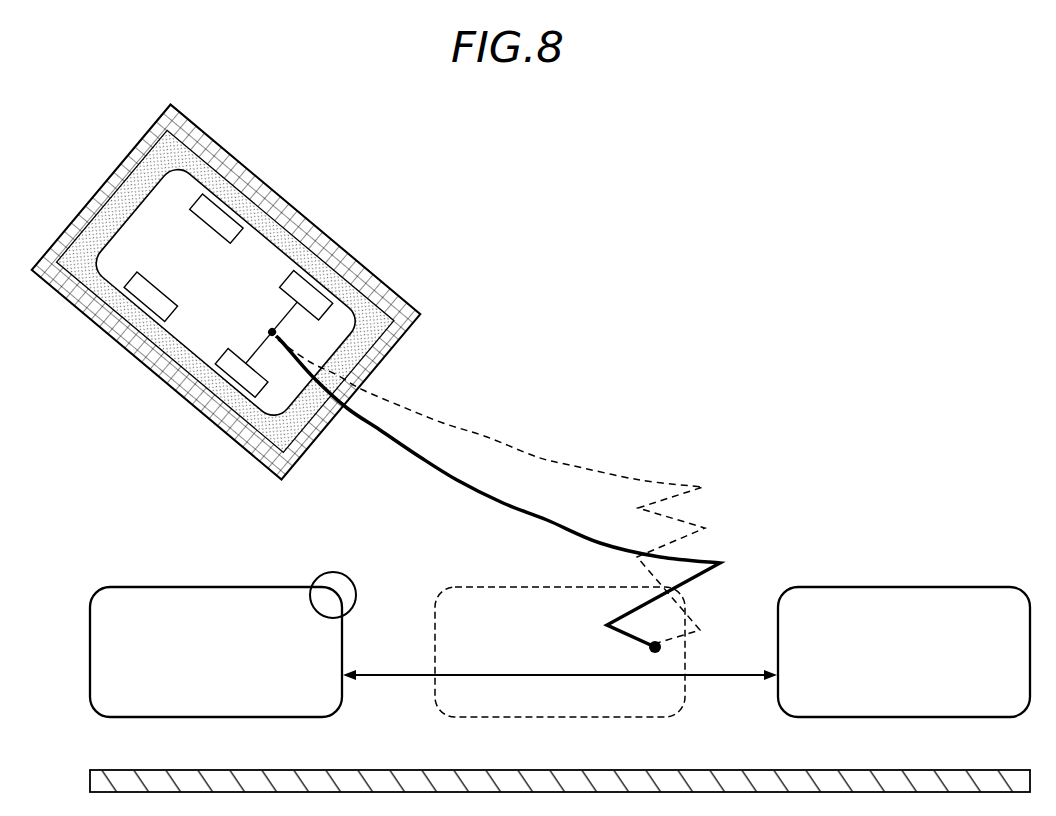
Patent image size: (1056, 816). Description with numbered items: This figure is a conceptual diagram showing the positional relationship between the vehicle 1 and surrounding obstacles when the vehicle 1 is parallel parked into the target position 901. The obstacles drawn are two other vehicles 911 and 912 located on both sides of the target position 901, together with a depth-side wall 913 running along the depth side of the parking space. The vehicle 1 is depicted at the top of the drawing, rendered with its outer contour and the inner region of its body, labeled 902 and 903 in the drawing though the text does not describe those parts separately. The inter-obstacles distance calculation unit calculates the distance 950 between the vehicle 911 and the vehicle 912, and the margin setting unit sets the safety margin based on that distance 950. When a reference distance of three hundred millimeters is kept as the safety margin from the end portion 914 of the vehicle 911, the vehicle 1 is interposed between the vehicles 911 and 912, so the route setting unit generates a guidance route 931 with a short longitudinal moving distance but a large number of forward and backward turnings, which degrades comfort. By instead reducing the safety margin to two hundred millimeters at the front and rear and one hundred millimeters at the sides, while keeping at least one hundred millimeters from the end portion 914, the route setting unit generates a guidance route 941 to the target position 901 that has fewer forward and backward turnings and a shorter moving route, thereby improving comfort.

The vehicle 1 is at (292, 205).
The cushioning member 902 is at (318, 229).
The outer package 903 is at (345, 249).
The guidance route 931 is at (444, 422).
The guidance route 941 is at (453, 482).
The vehicle 911 is at (158, 586).
The end portion 914 is at (356, 586).
The target position 901 is at (477, 586).
The vehicle 912 is at (847, 587).
The distance 950 is at (492, 675).
The depth-side wall 913 is at (695, 770).